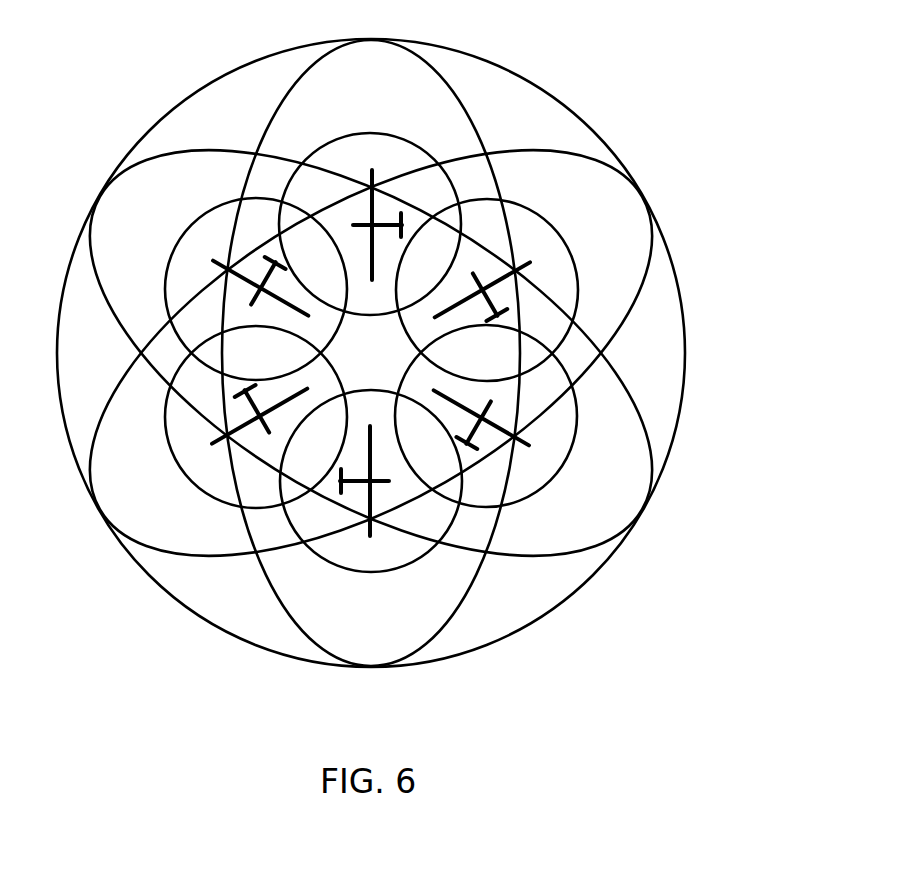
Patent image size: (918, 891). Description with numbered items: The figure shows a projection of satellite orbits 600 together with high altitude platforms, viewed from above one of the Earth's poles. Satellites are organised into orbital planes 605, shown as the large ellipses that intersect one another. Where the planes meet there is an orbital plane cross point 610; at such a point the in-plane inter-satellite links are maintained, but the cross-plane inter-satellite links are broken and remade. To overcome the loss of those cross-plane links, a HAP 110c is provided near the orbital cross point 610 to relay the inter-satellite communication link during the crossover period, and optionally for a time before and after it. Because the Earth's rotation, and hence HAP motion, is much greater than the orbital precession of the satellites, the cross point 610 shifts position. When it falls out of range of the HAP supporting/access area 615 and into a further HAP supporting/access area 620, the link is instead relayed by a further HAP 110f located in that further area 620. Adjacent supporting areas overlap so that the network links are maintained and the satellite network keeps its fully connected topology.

The satellite orbits 600 is at (510, 124).
The orbital plane 605 is at (623, 330).
The orbital plane cross point 610 is at (361, 537).
The HAP supporting/access area 615 is at (428, 562).
The further HAP supporting/access area 620 is at (537, 502).
The HAP 110c is at (373, 522).
The further HAP 110f is at (533, 450).